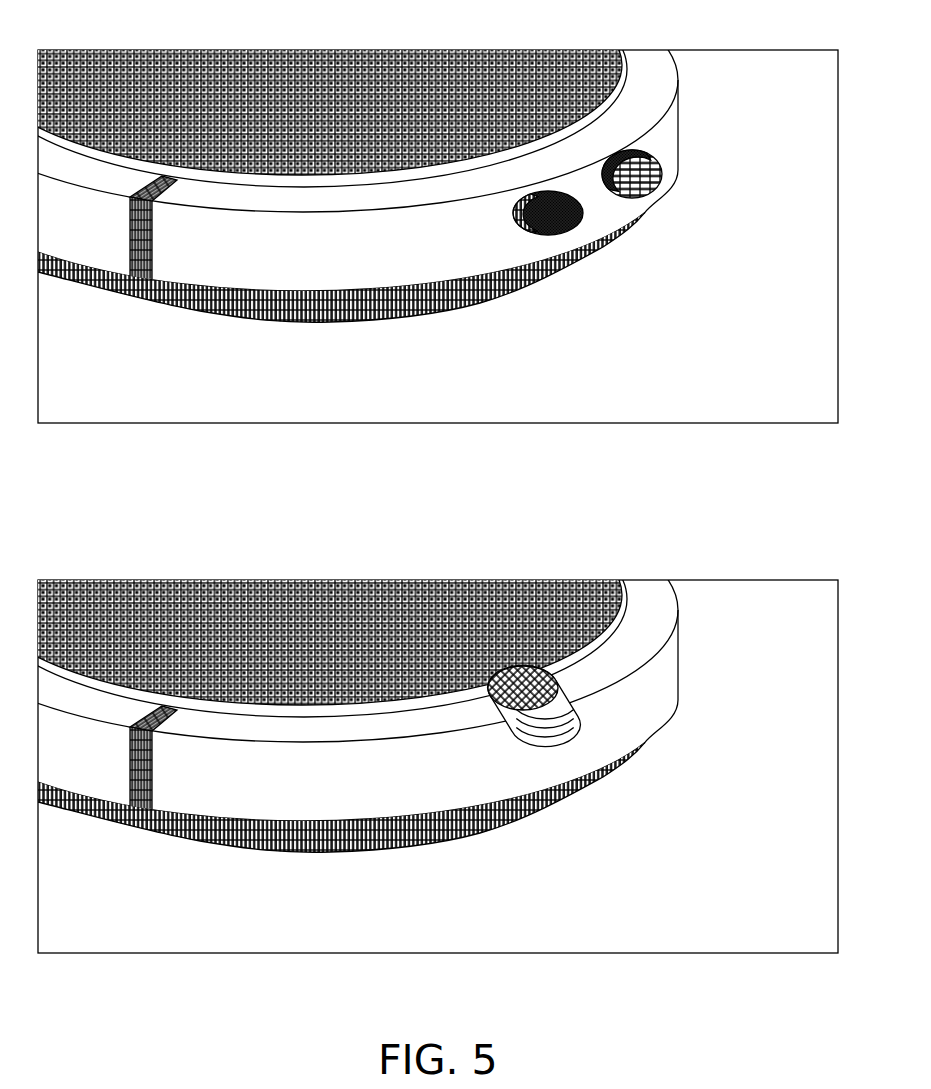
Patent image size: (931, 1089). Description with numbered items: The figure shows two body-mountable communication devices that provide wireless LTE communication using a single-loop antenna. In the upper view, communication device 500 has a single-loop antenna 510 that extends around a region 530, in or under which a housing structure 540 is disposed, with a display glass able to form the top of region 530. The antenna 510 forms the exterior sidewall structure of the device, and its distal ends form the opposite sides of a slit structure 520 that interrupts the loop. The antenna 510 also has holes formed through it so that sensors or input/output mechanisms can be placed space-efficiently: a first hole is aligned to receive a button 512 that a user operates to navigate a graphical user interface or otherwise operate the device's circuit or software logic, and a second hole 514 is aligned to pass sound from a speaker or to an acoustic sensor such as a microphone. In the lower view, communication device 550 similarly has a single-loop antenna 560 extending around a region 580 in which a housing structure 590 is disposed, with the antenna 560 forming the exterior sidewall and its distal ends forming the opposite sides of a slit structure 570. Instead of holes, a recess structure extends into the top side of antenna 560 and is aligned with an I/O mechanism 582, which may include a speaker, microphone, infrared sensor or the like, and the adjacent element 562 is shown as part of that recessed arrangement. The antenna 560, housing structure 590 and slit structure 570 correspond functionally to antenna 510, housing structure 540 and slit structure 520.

The body mountable communication device 500 is at (768, 50).
The single-loop antenna 510 is at (325, 262).
The button 512 is at (572, 225).
The second hole 514 is at (649, 176).
The slit structure 520 is at (140, 262).
The region 530 is at (311, 101).
The housing structure 540 is at (360, 333).
The body mountable communication device 550 is at (768, 580).
The single-loop antenna 560 is at (325, 792).
The protruding button body 562 is at (587, 747).
The slit structure 570 is at (140, 792).
The region 580 is at (311, 631).
The I/O mechanism 582 is at (519, 677).
The housing structure 590 is at (360, 863).